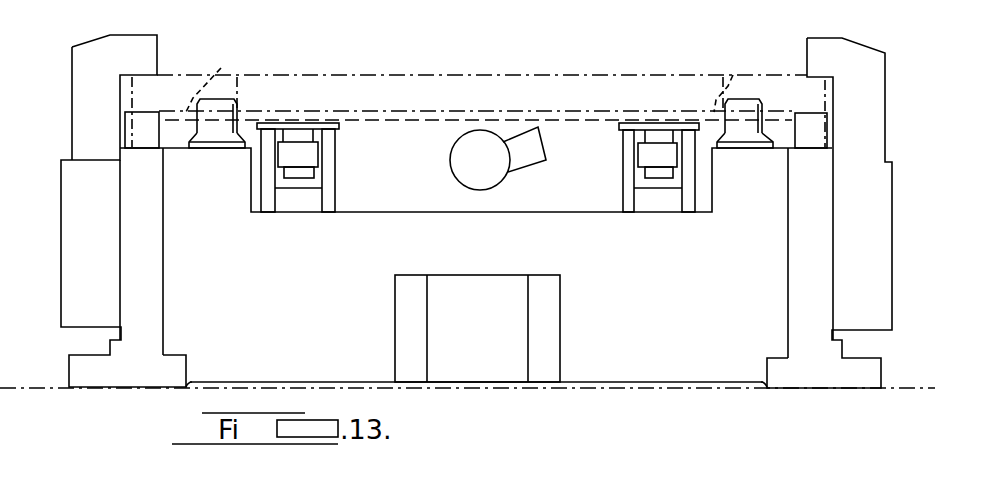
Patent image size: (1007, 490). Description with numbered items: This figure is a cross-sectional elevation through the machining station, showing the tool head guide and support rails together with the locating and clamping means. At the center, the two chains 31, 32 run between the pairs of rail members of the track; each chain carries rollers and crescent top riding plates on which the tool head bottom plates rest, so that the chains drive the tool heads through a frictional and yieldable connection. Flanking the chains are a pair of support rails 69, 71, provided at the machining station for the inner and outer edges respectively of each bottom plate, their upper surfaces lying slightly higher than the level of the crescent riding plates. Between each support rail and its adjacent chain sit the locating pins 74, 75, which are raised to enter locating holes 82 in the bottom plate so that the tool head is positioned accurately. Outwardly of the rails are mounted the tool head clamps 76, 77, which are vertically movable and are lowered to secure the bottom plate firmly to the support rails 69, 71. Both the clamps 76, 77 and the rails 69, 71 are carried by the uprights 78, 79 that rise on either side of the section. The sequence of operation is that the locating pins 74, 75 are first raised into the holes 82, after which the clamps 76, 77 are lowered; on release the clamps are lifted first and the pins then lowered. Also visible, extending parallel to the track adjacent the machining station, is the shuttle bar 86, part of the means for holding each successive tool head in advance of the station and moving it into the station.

The tool head clamp 76 is at (150, 38).
The tool head clamp 77 is at (858, 52).
The support rail 69 is at (142, 118).
The support rail 71 is at (817, 128).
The locating pin 74 is at (237, 110).
The locating pin 75 is at (750, 115).
The locating hole 82 is at (221, 68).
The chain 31 is at (323, 148).
The chain 32 is at (640, 155).
The shuttle bar 86 is at (468, 156).
The upright 78 is at (152, 262).
The upright 79 is at (805, 268).